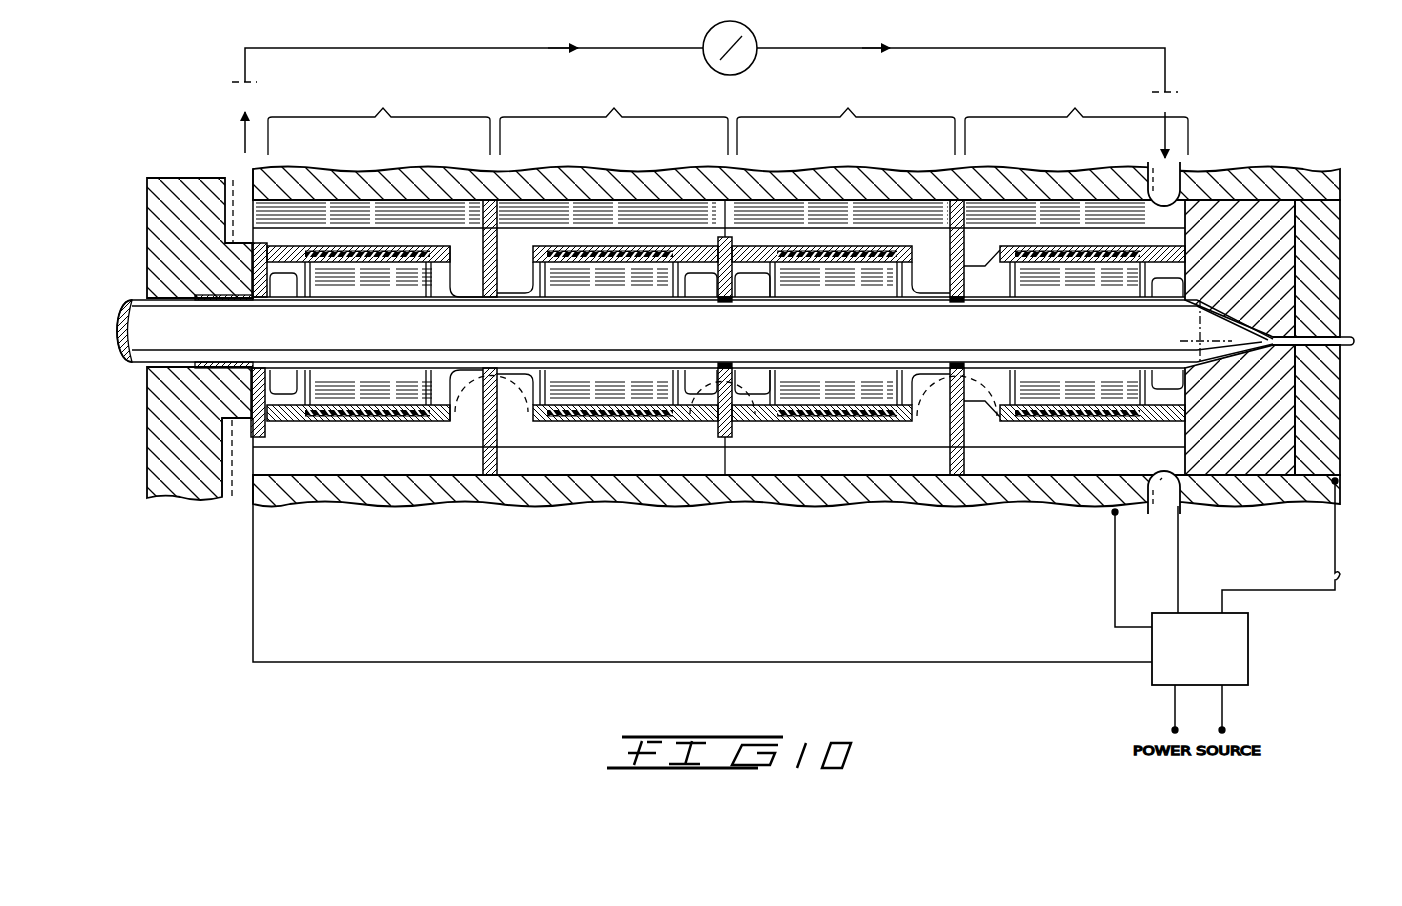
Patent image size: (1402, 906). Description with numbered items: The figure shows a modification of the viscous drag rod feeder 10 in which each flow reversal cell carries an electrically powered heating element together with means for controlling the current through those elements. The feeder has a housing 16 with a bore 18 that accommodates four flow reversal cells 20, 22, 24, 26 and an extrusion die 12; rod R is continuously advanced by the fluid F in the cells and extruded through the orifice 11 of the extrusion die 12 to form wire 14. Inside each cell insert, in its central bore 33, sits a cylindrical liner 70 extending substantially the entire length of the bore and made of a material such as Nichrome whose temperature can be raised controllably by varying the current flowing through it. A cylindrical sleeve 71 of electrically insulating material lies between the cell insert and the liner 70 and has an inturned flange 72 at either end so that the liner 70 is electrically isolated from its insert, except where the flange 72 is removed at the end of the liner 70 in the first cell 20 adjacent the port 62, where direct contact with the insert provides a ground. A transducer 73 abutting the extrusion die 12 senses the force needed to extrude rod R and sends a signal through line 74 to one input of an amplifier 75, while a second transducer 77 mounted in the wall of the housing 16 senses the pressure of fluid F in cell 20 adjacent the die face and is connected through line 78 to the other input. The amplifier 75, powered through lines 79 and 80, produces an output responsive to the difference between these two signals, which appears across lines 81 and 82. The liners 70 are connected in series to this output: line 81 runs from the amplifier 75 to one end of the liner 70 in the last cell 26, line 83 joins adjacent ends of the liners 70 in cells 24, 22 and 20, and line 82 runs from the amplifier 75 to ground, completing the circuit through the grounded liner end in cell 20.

The viscous drag rod feeder 10 is at (1202, 82).
The orifice 11 is at (1232, 319).
The extrusion die 12 is at (1188, 439).
The wire 14 is at (1320, 339).
The housing 16 is at (752, 183).
The bore 18 is at (362, 198).
The first flow reversal cell 20 is at (1076, 124).
The flow reversal cell 22 is at (846, 122).
The flow reversal cell 24 is at (614, 122).
The fourth flow reversal cell 26 is at (379, 121).
The central bore 33 is at (443, 398).
The port 62 is at (1150, 186).
The cylindrical liner 70 is at (402, 278).
The cylindrical sleeve 71 is at (367, 250).
The inturned flange 72 is at (297, 254).
The transducer 73 is at (1338, 480).
The line 74 is at (1333, 549).
The amplifier 75 is at (1250, 663).
The transducer 77 is at (1176, 480).
The line 78 is at (1178, 569).
The line 79 is at (1175, 713).
The line 80 is at (1227, 712).
The line 81 is at (522, 661).
The line 82 is at (1115, 578).
The line 83 is at (980, 408).
The fluid F is at (1002, 52).
The rod R is at (674, 331).